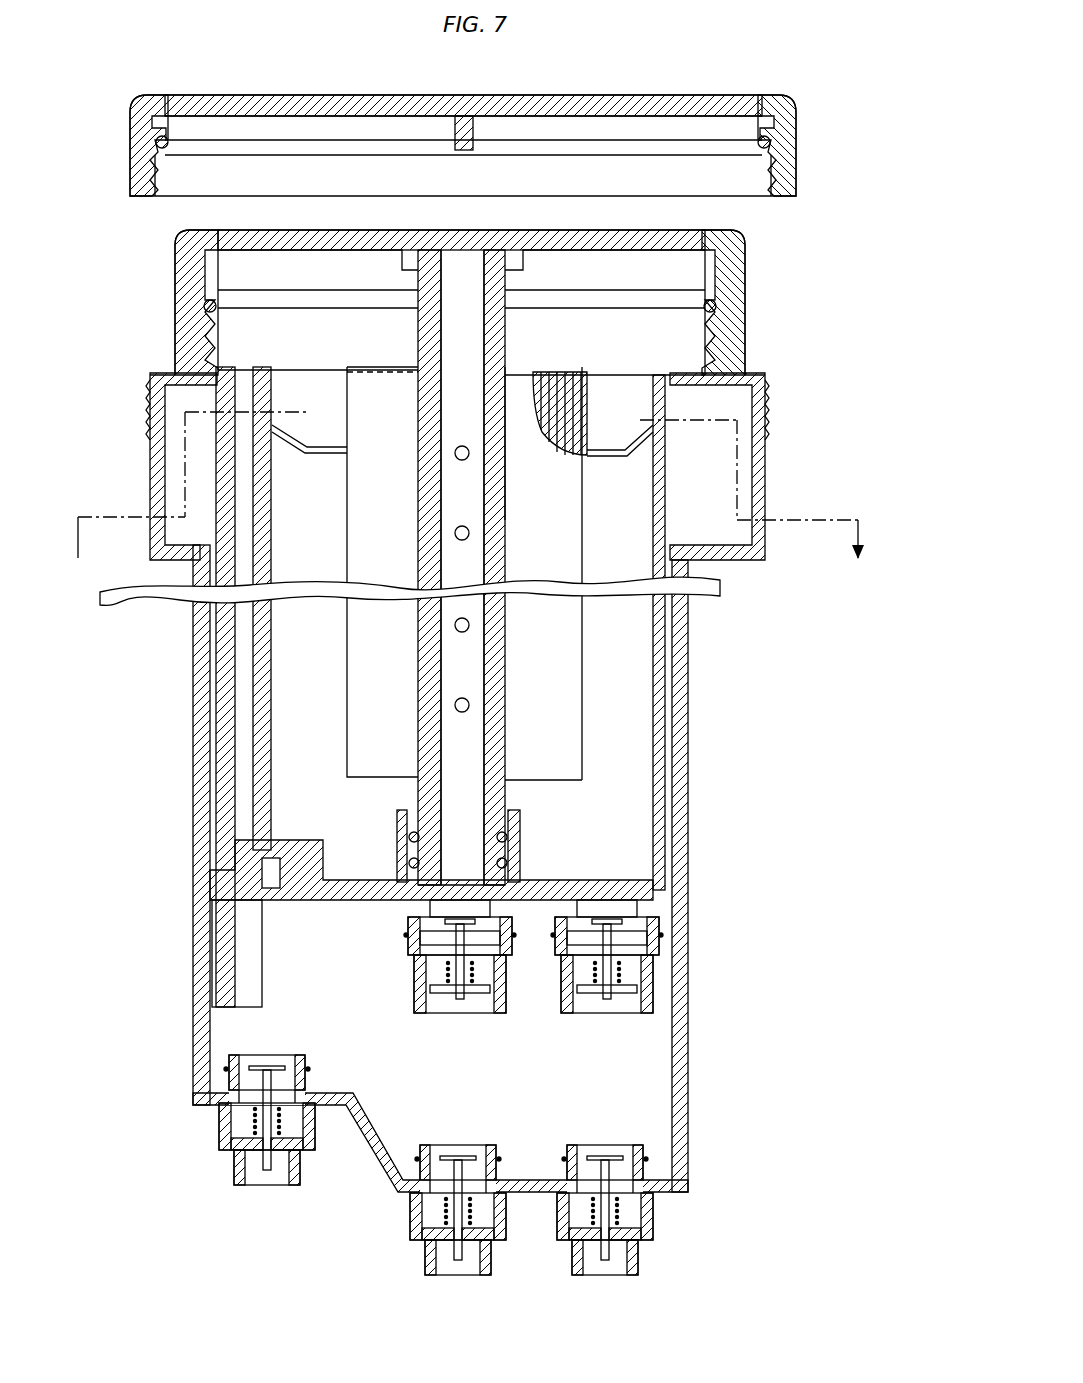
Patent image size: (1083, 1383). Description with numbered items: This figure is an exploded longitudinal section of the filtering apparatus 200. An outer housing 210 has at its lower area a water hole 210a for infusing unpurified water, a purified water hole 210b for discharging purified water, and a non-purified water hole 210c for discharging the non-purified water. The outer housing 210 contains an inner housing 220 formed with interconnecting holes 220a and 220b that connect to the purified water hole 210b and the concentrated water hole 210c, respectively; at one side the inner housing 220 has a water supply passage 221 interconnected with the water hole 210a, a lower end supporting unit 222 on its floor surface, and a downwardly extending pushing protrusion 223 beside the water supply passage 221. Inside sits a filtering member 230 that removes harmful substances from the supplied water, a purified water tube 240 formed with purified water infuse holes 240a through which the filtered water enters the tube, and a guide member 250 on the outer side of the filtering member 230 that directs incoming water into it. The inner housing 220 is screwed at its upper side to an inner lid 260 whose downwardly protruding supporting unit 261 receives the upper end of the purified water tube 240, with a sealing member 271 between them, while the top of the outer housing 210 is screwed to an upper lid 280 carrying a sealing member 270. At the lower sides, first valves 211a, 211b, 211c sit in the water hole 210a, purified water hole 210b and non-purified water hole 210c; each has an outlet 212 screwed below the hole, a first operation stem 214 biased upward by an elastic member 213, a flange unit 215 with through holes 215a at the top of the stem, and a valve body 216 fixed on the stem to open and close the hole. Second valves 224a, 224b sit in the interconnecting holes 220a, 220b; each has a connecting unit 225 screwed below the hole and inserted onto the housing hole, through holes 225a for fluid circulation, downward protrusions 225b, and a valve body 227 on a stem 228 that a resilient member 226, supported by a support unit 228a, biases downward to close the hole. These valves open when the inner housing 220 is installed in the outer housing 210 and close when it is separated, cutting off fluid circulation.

The upper lid 280 is at (672, 106).
The sealing member 270 is at (798, 154).
The sealing member 271 is at (735, 264).
The filtering apparatus 200 is at (797, 330).
The inner lid 260 is at (195, 240).
The supporting unit 261 is at (523, 266).
The filtering member 230 is at (370, 392).
The guide member 250 is at (605, 450).
The purified water tube 240 is at (505, 650).
The purified water infuse holes 240a is at (507, 522).
The water supply passage 221 is at (243, 635).
The lower end supporting unit 222 is at (525, 837).
The pushing protrusion 223 is at (455, 904).
The outer housing 210 is at (687, 710).
The inner housing 220 is at (657, 777).
The valve body 227 is at (612, 914).
The interconnecting hole 220a is at (410, 932).
The interconnecting hole 220b is at (663, 877).
The second valve 224a is at (402, 1017).
The second valve 224b is at (530, 1027).
The connecting unit 225 is at (655, 1002).
The through holes 225a is at (660, 947).
The downward protrusions 225b is at (617, 1015).
The resilient member 226 is at (654, 967).
The stem 228 is at (593, 1017).
The support unit 228a is at (655, 1010).
The flange unit 215 is at (262, 1062).
The through holes 215a is at (260, 1064).
The valve body 216 is at (260, 1097).
The elastic member 213 is at (250, 1120).
The outlet 212 is at (233, 1169).
The first operation stem 214 is at (258, 1182).
The first valve 211a is at (198, 1162).
The first valve 211b is at (420, 1267).
The first valve 211c is at (645, 1278).
The water hole 210a is at (302, 1145).
The purified water hole 210b is at (500, 1234).
The non-purified water hole 210c is at (648, 1224).